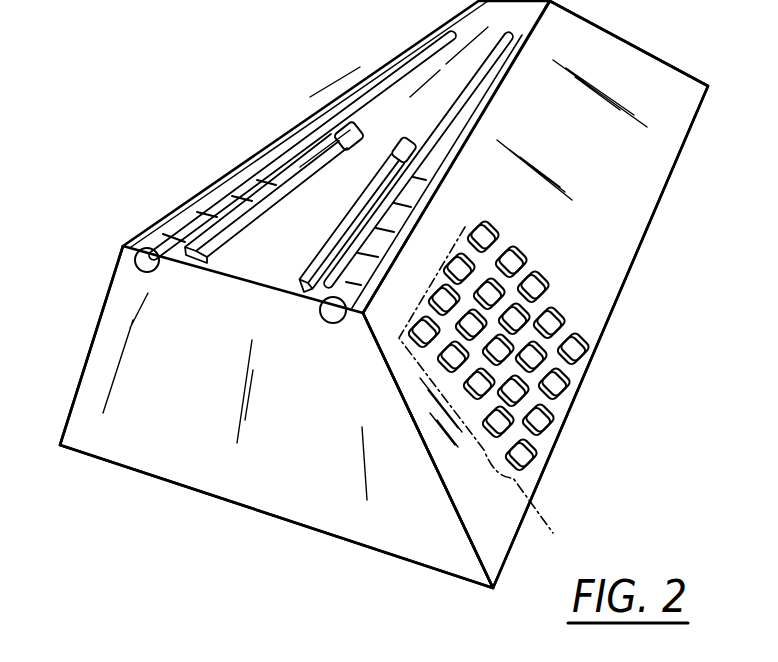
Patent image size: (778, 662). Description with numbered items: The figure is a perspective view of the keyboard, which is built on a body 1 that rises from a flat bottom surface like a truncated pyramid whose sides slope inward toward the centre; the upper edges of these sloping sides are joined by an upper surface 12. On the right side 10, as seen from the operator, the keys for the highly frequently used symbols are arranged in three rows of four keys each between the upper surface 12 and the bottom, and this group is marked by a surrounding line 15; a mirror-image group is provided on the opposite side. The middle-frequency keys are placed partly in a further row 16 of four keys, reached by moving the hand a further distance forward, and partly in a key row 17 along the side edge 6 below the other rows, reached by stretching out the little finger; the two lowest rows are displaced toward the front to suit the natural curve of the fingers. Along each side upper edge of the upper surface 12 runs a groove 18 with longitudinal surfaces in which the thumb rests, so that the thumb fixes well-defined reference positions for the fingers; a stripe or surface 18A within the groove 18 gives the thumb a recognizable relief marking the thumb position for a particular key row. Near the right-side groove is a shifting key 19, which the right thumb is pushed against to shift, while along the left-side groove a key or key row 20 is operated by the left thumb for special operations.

The body 1 is at (641, 32).
The side edge 6 is at (545, 345).
The right side 10 is at (656, 157).
The upper surface 12 is at (231, 266).
The surrounding line 15 is at (483, 395).
The row of keys 16 is at (582, 318).
The key row along the edge 17 is at (598, 330).
The groove 18 is at (150, 254).
The stripe 18A is at (250, 188).
The shifting key 19 is at (400, 153).
The key row 20 is at (338, 140).